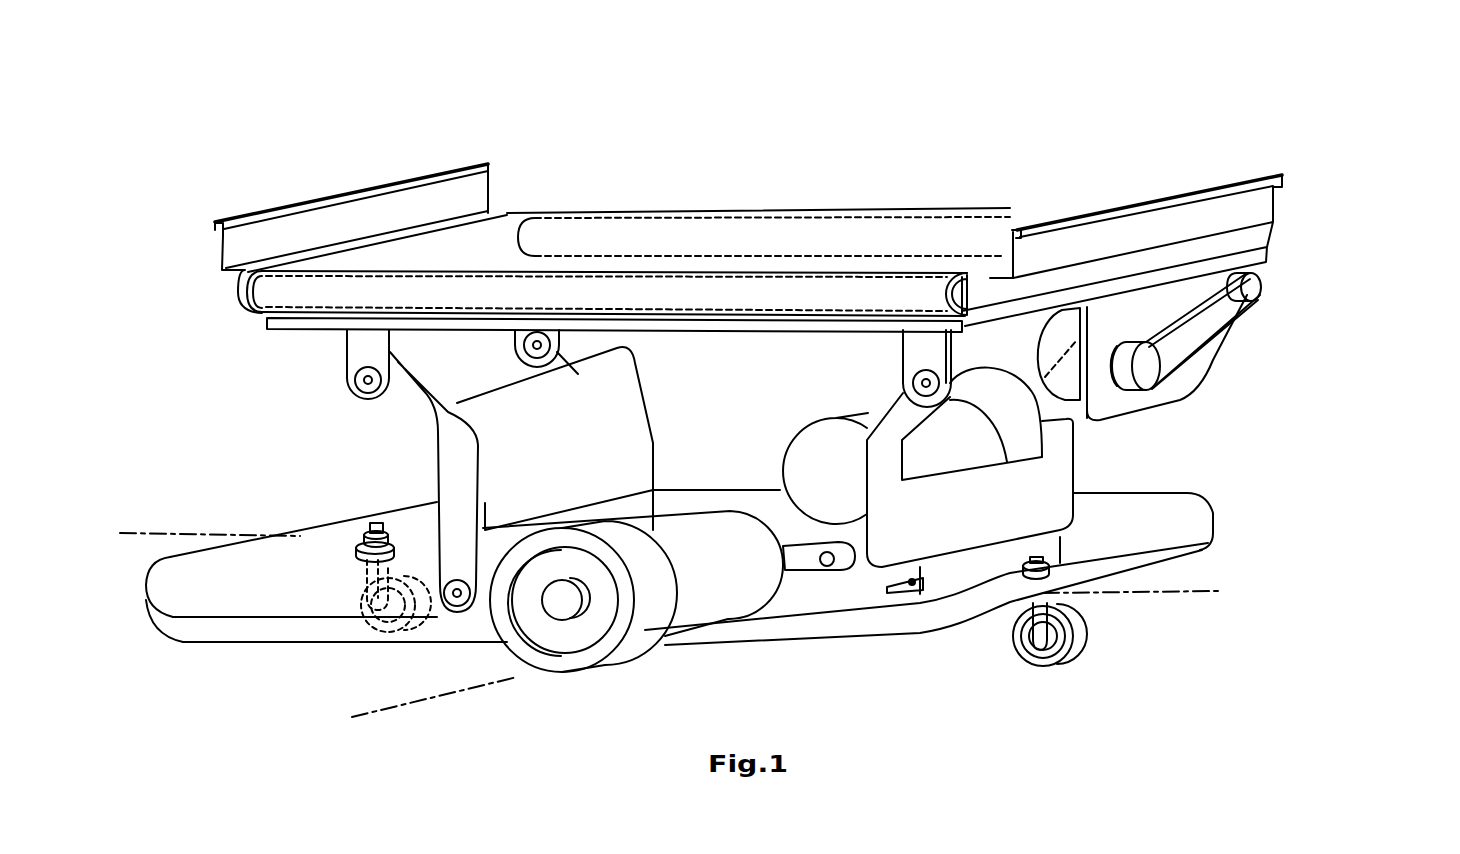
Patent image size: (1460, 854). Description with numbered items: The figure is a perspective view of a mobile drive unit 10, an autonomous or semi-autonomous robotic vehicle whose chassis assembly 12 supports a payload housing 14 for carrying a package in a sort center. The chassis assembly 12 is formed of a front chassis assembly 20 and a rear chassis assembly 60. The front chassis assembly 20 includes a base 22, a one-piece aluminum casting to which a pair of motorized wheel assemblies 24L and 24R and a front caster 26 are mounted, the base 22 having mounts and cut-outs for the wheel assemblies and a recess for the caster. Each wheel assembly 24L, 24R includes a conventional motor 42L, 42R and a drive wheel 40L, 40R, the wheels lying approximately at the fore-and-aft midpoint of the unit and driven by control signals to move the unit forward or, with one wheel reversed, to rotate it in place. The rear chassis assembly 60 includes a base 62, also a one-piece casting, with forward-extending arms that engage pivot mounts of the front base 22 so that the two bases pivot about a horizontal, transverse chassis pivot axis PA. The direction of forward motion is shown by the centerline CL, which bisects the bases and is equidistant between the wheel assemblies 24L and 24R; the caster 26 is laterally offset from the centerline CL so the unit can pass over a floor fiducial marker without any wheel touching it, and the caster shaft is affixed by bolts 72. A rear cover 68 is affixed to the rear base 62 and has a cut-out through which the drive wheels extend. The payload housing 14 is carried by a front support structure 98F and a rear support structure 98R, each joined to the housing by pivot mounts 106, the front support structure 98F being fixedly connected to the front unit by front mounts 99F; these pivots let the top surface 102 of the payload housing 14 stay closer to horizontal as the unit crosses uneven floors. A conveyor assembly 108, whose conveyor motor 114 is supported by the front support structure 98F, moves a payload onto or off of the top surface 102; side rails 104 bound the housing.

The mobile drive unit 10 is at (197, 120).
The chassis assembly 12 is at (1245, 690).
The payload housing 14 is at (1348, 360).
The front chassis assembly 20 is at (957, 622).
The base 22 is at (807, 602).
The left motorized wheel assembly 24L is at (993, 383).
The right motorized wheel assembly 24R is at (565, 602).
The front caster 26 is at (373, 597).
The left drive wheel 40L is at (1018, 427).
The right drive wheel 40R is at (577, 665).
The left motor 42L is at (803, 475).
The right motor 42R is at (698, 573).
The rear chassis assembly 60 is at (265, 642).
The base 62 is at (187, 627).
The rear cover 68 is at (790, 545).
The bolts 72 is at (373, 523).
The front support structure 98F is at (960, 524).
The rear support structure 98R is at (526, 450).
The front mounts 99F is at (908, 592).
The top surface 102 is at (630, 233).
The side rail 104 is at (382, 197).
The pivot mounts 106 is at (363, 380).
The conveyor assembly 108 is at (1262, 285).
The conveyor motor 114 is at (1055, 330).
The centerline CL is at (674, 562).
The chassis pivot axis PA is at (418, 707).